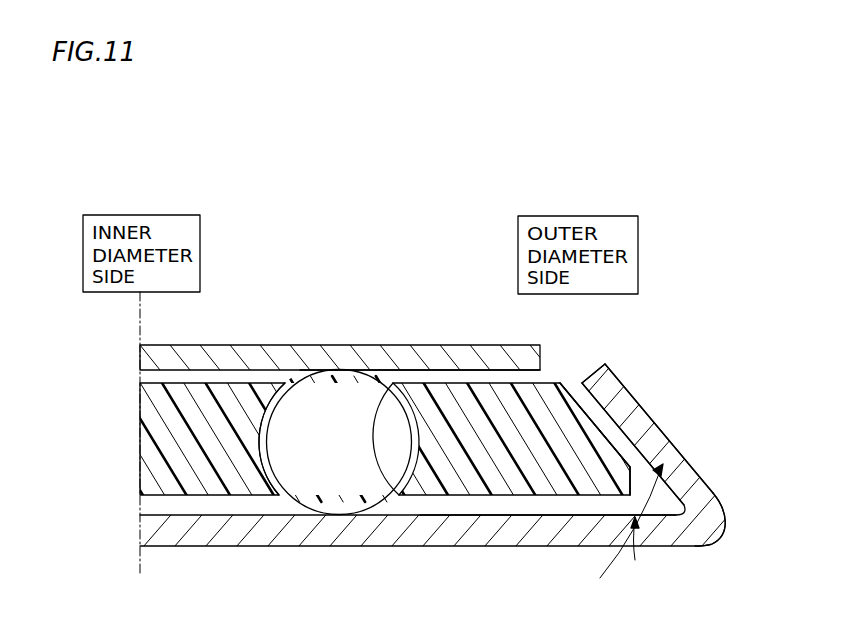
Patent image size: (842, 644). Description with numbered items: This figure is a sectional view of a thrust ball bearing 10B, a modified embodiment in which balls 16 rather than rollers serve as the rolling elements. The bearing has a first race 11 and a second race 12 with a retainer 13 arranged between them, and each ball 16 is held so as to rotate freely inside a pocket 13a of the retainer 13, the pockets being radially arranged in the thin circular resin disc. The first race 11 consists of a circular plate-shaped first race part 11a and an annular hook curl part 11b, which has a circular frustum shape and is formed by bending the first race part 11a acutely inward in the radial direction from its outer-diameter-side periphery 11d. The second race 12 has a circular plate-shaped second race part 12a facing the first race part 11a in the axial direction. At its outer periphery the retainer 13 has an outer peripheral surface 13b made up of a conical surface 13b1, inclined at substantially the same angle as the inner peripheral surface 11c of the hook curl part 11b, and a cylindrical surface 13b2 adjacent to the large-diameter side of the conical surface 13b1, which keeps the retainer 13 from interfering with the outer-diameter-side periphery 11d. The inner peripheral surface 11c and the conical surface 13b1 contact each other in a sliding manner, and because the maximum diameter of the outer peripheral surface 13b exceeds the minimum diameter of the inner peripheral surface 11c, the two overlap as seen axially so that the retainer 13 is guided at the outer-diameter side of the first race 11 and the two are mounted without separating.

The thrust ball bearing 10B is at (616, 183).
The first race 11 is at (410, 547).
The first race part 11a is at (500, 535).
The hook curl part 11b is at (660, 447).
The inner peripheral surface 11c is at (600, 410).
The outer-diameter-side periphery 11d is at (708, 528).
The second race 12 is at (448, 344).
The second race part 12a is at (398, 357).
The retainer 13 is at (193, 383).
The pocket 13a is at (262, 440).
The outer peripheral surface 13b is at (721, 357).
The conical surface 13b1 is at (600, 436).
The cylindrical surface 13b2 is at (633, 478).
The ball 16 is at (335, 405).